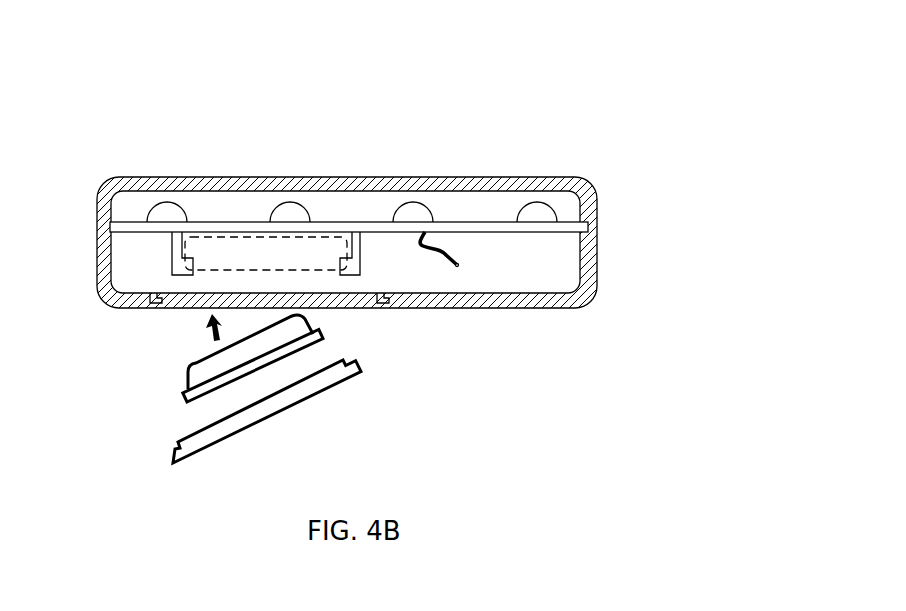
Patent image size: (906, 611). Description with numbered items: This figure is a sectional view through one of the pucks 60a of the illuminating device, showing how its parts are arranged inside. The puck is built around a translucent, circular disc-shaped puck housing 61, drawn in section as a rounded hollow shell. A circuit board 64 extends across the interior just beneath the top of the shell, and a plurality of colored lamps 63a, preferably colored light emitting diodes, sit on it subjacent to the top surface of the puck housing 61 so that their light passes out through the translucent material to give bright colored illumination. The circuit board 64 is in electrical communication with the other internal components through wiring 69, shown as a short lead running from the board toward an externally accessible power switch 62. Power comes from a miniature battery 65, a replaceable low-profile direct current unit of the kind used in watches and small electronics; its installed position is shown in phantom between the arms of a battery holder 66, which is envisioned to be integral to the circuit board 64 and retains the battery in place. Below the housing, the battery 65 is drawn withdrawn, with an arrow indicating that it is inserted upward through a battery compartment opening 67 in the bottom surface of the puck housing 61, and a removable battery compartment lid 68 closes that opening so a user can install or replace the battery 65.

The puck 60a is at (697, 48).
The puck housing 61 is at (598, 268).
The power switch 62 is at (460, 272).
The colored lamps 63a is at (290, 212).
The circuit board 64 is at (355, 220).
The miniature battery 65 is at (200, 373).
The battery holder 66 is at (350, 275).
The battery compartment opening 67 is at (183, 297).
The removable battery compartment lid 68 is at (167, 453).
The wiring 69 is at (445, 255).